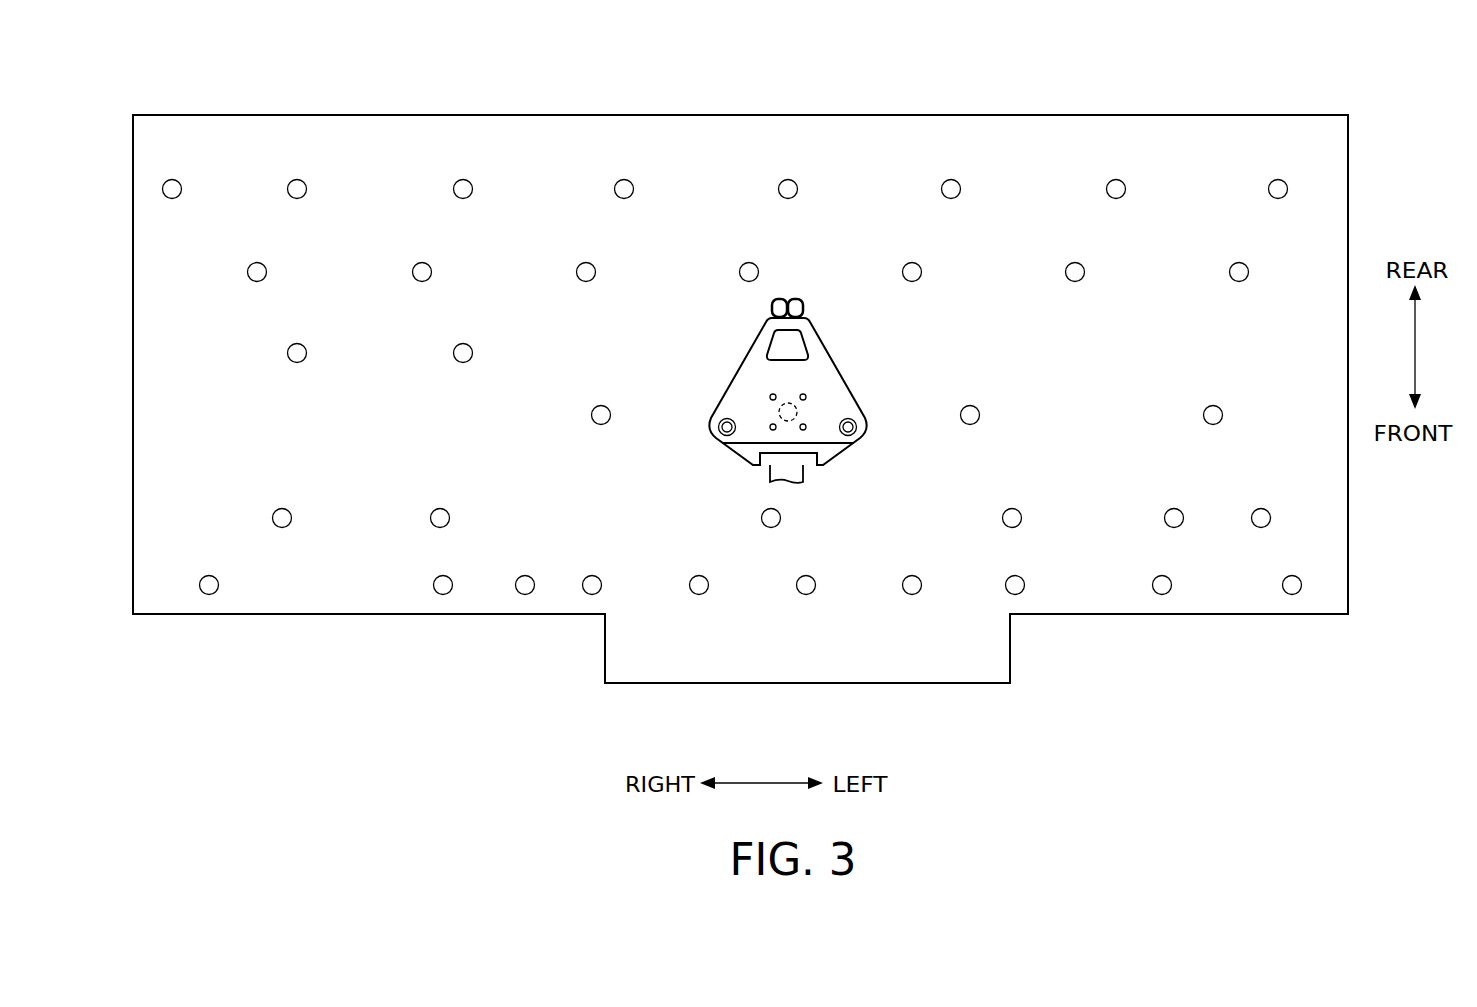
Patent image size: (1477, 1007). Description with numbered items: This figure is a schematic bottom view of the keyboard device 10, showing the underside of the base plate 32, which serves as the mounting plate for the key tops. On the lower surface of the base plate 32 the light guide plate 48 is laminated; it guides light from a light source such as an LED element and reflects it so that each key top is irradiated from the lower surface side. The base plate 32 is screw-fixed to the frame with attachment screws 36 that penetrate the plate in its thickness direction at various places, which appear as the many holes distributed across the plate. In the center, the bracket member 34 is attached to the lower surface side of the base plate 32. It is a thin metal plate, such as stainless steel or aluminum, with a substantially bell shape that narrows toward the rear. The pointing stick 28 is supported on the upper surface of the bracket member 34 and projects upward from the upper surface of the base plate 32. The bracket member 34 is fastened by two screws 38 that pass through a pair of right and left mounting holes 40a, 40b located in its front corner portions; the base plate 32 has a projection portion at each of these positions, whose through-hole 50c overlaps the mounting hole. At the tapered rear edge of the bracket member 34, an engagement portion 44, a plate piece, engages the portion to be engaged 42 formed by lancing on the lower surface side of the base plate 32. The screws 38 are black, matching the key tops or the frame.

The keyboard device 10 is at (165, 48).
The base plate 32 is at (855, 147).
The light guide plate 48 is at (690, 147).
The attachment screws 36 is at (295, 353).
The bracket member 34 is at (722, 362).
The pointing stick 28 is at (798, 406).
The portion to be engaged 42 is at (785, 300).
The engagement portion 44 is at (802, 308).
The mounting hole 40a is at (856, 428).
The mounting hole 40b is at (718, 428).
The through-hole 50c is at (788, 439).
The screws 38 is at (788, 439).